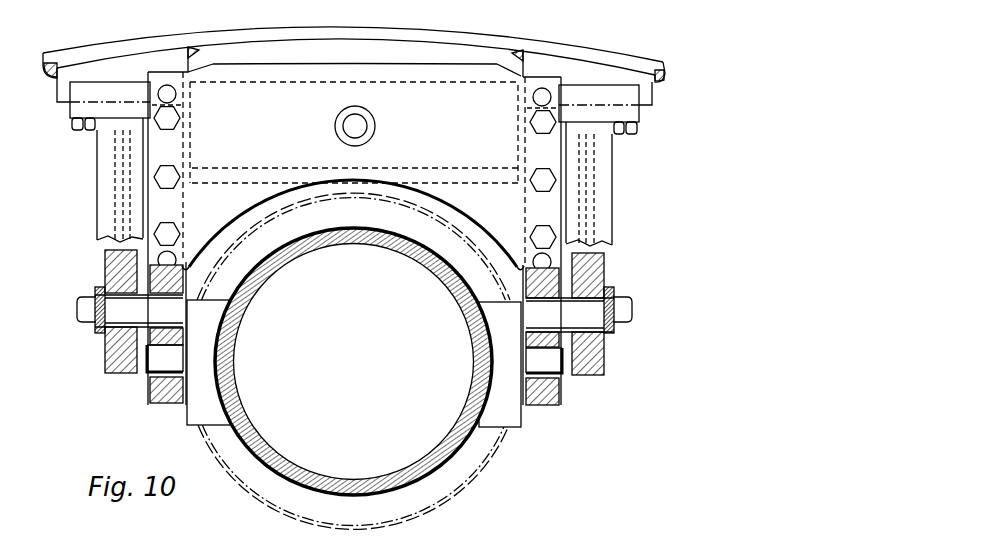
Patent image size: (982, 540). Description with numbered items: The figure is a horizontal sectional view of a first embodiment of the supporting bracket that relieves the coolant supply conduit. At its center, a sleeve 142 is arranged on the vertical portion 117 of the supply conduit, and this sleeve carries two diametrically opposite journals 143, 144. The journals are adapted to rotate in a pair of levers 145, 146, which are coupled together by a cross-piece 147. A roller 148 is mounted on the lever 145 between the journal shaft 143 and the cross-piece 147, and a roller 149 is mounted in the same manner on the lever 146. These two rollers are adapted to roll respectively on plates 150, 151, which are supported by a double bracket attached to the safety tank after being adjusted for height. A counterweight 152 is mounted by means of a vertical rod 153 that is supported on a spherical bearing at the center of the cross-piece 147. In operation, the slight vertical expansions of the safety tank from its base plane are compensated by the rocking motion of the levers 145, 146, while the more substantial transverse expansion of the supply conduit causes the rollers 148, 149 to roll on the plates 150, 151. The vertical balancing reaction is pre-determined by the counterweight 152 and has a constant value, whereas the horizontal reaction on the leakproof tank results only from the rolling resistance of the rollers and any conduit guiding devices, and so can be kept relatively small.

The vertical portion of the supply conduit 117 is at (368, 486).
The sleeve 142 is at (473, 472).
The journal 143 is at (147, 378).
The journal 144 is at (563, 380).
The lever 145 is at (173, 212).
The lever 146 is at (545, 202).
The cross-piece 147 is at (243, 66).
The roller 148 is at (118, 352).
The roller 149 is at (600, 277).
The plate 150 is at (106, 197).
The plate 151 is at (605, 212).
The counterweight 152 is at (217, 66).
The vertical rod 153 is at (368, 138).